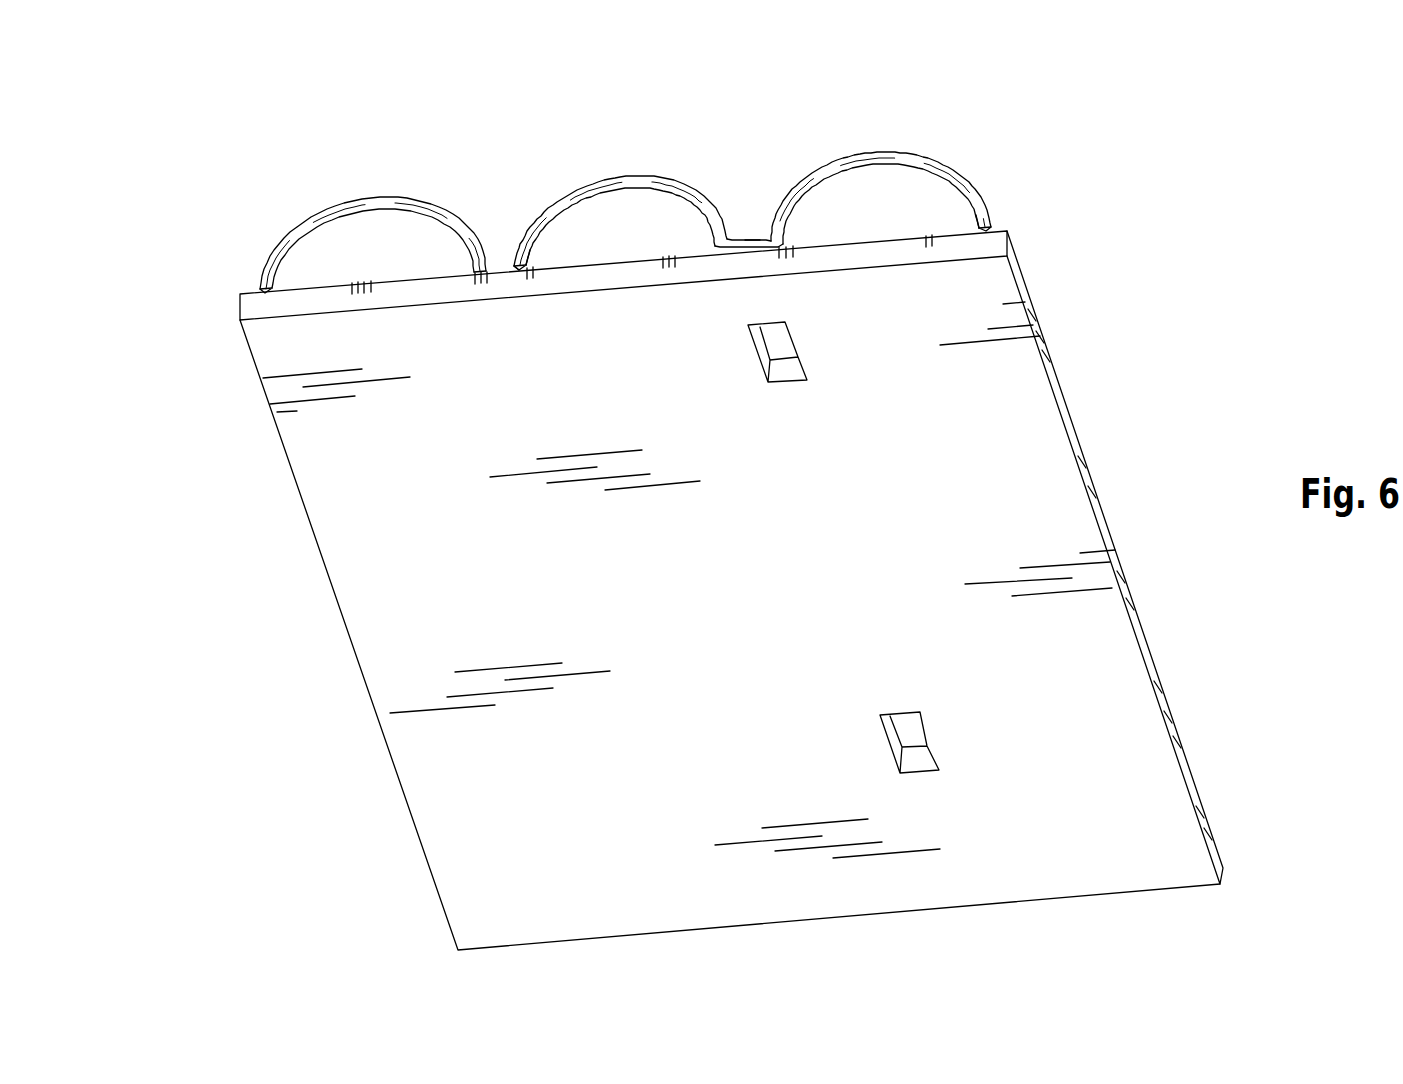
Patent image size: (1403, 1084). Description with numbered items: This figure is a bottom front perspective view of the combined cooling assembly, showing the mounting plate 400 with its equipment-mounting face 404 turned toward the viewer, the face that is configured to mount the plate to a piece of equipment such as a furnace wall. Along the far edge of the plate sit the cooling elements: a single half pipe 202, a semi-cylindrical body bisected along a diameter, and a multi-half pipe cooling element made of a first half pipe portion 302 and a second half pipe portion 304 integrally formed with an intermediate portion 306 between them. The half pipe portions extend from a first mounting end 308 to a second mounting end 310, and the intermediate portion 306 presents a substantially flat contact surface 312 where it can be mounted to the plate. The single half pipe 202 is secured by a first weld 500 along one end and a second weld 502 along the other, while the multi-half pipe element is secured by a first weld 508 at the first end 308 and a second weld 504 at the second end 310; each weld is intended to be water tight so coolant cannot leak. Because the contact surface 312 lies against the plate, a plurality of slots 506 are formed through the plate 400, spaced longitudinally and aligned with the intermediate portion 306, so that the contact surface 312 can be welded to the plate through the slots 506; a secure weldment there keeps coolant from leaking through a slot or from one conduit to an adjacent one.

The single half pipe 202 is at (357, 200).
The first half pipe portion 302 is at (877, 152).
The second half pipe portion 304 is at (648, 177).
The intermediate portion 306 is at (747, 238).
The first mounting end 308 is at (528, 265).
The second mounting end 310 is at (973, 230).
The contact surface 312 is at (757, 247).
The mounting plate 400 is at (1127, 855).
The equipment-mounting face 404 is at (475, 806).
The first weld 500 is at (600, 214).
The second weld 502 is at (490, 266).
The second weld 504 is at (995, 227).
The slot 506 is at (783, 380).
The first weld 508 is at (511, 279).